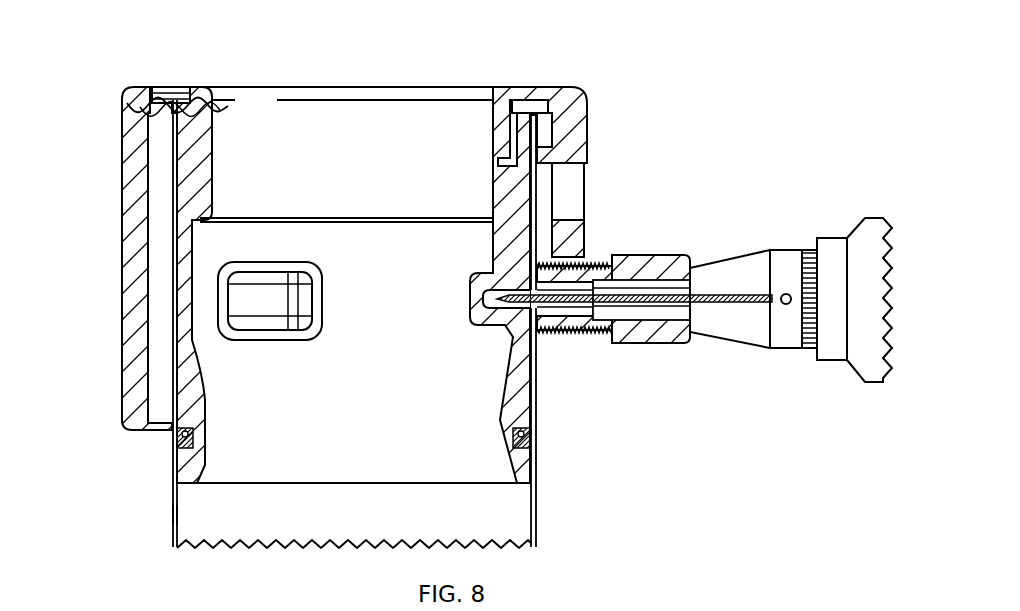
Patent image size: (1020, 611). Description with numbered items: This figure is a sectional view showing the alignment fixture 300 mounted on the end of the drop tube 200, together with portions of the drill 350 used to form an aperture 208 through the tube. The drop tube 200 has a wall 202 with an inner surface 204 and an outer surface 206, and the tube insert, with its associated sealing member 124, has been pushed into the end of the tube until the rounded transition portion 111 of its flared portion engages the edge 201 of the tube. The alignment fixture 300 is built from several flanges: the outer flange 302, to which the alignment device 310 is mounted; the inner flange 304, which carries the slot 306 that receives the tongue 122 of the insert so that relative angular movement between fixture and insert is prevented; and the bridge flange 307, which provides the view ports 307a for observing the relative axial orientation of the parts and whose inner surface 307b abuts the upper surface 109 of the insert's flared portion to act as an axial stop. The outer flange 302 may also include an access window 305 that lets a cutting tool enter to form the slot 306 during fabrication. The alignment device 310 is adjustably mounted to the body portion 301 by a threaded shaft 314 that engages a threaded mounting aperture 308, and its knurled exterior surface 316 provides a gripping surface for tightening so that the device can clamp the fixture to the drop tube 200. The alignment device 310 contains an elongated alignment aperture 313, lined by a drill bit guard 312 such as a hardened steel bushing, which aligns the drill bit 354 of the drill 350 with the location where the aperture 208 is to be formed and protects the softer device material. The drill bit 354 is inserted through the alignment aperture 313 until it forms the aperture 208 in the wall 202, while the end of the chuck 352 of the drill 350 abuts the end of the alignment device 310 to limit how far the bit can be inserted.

The upper surface 109 is at (545, 108).
The transition portion 111 is at (128, 103).
The tongue 122 is at (493, 235).
The sealing member 124 is at (530, 440).
The drop tube 200 is at (160, 538).
The edge 201 is at (353, 107).
The wall 202 is at (173, 462).
The inner surface 204 is at (187, 515).
The outer surface 206 is at (163, 515).
The aperture 208 is at (520, 302).
The alignment fixture 300 is at (596, 98).
The body portion 301 is at (600, 133).
The outer flange 302 is at (122, 258).
The inner flange 304 is at (213, 158).
The access window 305 is at (583, 178).
The slot 306 is at (498, 165).
The bridge flange 307 is at (538, 105).
The view port 307a is at (188, 82).
The inner surface 307b is at (546, 118).
The mounting aperture 308 is at (598, 282).
The alignment device 310 is at (660, 240).
The drill bit guard 312 is at (668, 281).
The elongated alignment aperture 313 is at (690, 301).
The threaded shaft 314 is at (590, 344).
The exterior surface 316 is at (635, 256).
The drill 350 is at (827, 402).
The chuck 352 is at (745, 343).
The drill bit 354 is at (668, 300).